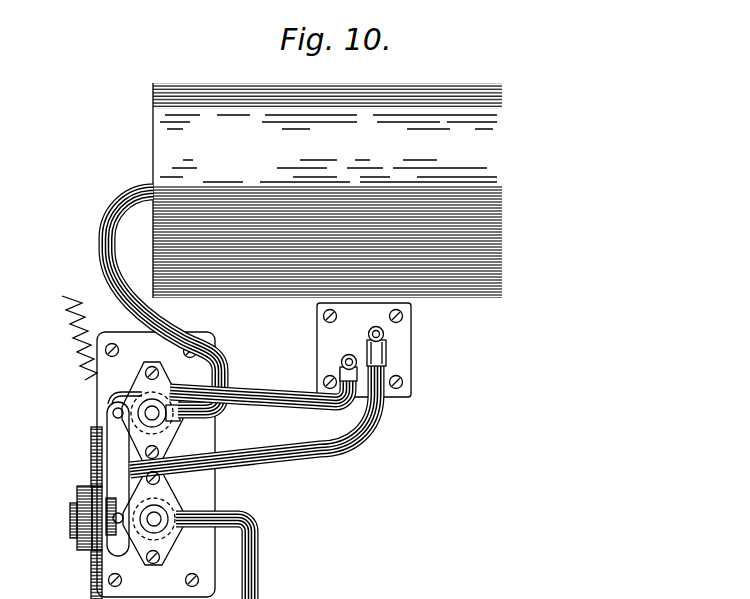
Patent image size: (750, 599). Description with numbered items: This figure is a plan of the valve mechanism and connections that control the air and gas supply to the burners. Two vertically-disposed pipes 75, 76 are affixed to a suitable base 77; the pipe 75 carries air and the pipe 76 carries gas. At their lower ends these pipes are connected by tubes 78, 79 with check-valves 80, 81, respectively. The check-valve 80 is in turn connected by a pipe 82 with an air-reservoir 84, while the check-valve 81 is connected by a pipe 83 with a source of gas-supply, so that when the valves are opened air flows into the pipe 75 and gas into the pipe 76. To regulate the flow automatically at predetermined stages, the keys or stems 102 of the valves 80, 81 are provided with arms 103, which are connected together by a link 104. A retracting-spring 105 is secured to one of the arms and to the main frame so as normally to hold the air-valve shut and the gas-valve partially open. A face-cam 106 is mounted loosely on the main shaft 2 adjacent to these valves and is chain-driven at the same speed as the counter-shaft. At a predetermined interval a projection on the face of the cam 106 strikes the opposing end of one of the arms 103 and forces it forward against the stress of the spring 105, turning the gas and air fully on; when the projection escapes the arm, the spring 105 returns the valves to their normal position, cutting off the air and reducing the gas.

The main shaft 2 is at (70, 519).
The vertically-disposed pipe 75 is at (343, 361).
The vertically-disposed pipe 76 is at (383, 334).
The base 77 is at (364, 345).
The tube 78 is at (252, 390).
The tube 79 is at (276, 451).
The check-valve 80 is at (166, 378).
The check-valve 81 is at (172, 502).
The pipe 82 is at (102, 235).
The pipe 83 is at (252, 559).
The air-reservoir 84 is at (327, 190).
The key or stem 102 is at (168, 425).
The arm 103 is at (105, 413).
The link 104 is at (117, 452).
The retracting-spring 105 is at (62, 303).
The face-cam 106 is at (100, 572).